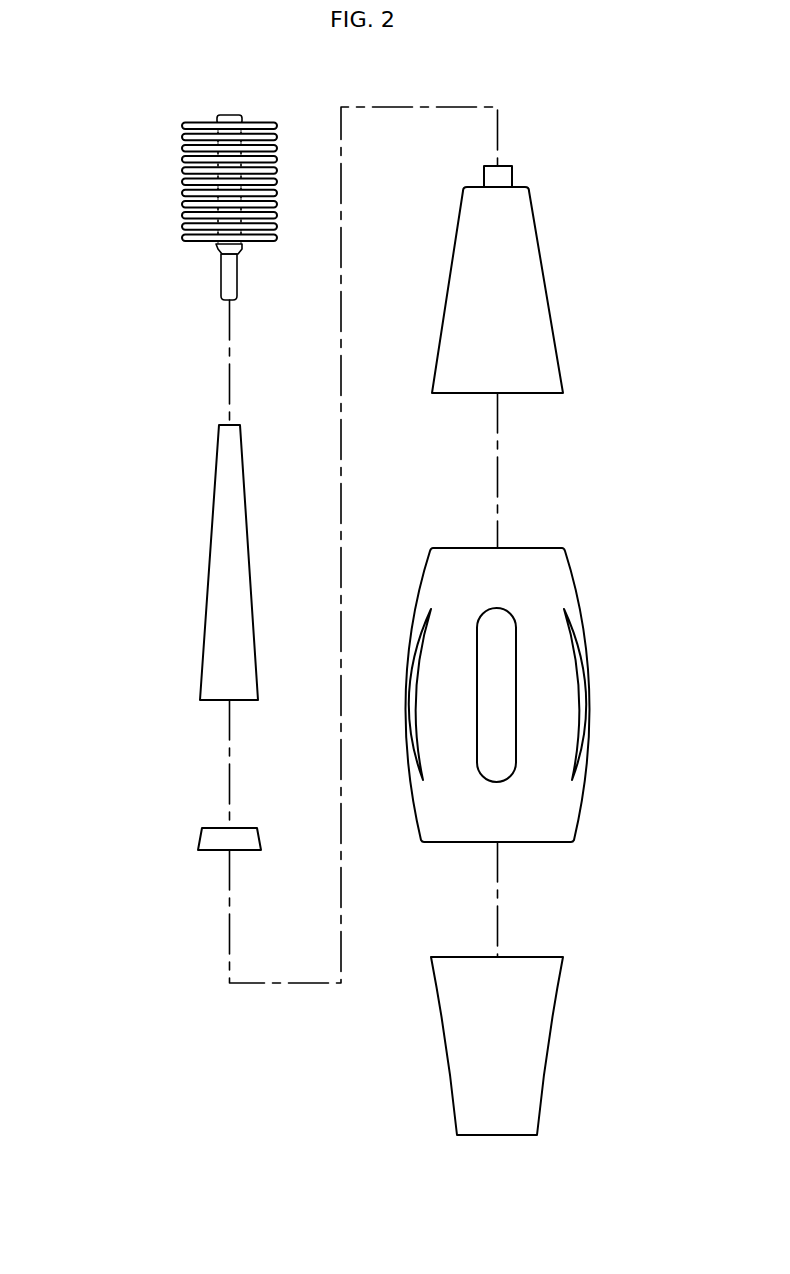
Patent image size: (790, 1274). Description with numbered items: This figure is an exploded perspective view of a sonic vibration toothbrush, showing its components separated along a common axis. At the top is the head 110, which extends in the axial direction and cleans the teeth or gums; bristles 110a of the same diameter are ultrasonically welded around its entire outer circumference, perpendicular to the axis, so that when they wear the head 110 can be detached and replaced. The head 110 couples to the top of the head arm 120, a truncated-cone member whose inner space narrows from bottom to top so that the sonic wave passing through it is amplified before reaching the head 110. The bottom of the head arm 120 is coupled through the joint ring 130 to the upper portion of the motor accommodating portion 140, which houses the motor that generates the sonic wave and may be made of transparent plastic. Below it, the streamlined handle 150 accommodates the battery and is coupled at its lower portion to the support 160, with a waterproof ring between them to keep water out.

The head 110 is at (172, 193).
The bristles 110a is at (183, 126).
The head arm 120 is at (226, 633).
The joint ring 130 is at (208, 840).
The motor accommodating portion 140 is at (545, 363).
The handle 150 is at (563, 812).
The support 160 is at (533, 1035).